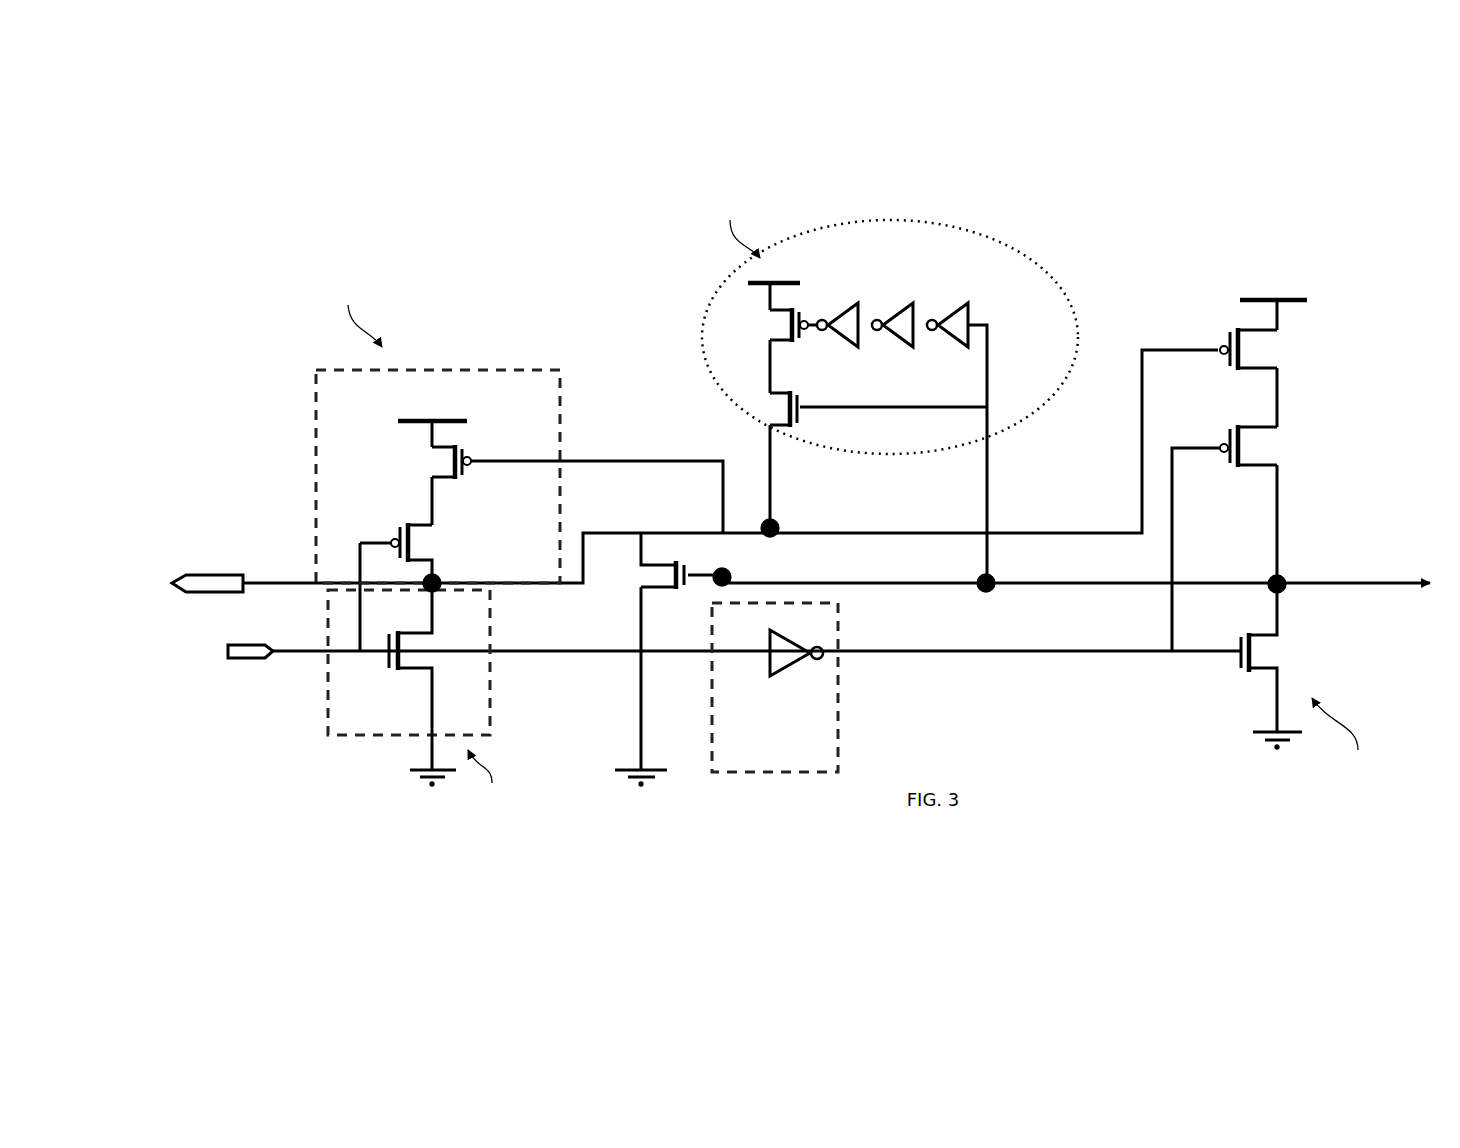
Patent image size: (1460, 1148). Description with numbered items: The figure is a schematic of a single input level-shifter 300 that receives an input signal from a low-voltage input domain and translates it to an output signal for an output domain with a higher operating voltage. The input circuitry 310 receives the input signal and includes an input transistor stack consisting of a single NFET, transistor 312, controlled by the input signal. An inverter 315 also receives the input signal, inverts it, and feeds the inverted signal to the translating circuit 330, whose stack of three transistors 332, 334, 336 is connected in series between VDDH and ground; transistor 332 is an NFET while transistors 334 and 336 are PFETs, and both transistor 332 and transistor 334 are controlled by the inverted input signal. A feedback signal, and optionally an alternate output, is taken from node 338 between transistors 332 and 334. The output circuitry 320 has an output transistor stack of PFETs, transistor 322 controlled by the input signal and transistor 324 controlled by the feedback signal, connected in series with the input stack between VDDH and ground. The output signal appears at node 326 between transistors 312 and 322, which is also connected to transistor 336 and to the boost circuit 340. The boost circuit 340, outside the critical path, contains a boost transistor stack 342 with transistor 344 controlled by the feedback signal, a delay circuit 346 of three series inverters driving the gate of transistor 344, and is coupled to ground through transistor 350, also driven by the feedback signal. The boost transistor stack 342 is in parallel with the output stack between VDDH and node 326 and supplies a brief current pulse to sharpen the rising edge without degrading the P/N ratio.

The single input level-shifter 300 is at (228, 193).
The input circuitry 310 is at (328, 702).
The transistor 312 is at (437, 667).
The inverter 315 is at (840, 685).
The output circuitry 320 is at (316, 470).
The transistor 322 is at (410, 523).
The transistor 324 is at (438, 475).
The node 326 is at (438, 576).
The translating circuit 330 is at (1336, 300).
The transistor 332 is at (1282, 632).
The transistor 334 is at (1282, 428).
The transistor 336 is at (1282, 330).
The node 338 is at (733, 575).
The boost circuit 340 is at (703, 350).
The boost transistor stack 342 is at (765, 420).
The transistor 344 is at (770, 332).
The delay circuit 346 is at (922, 300).
The transistor 350 is at (630, 589).